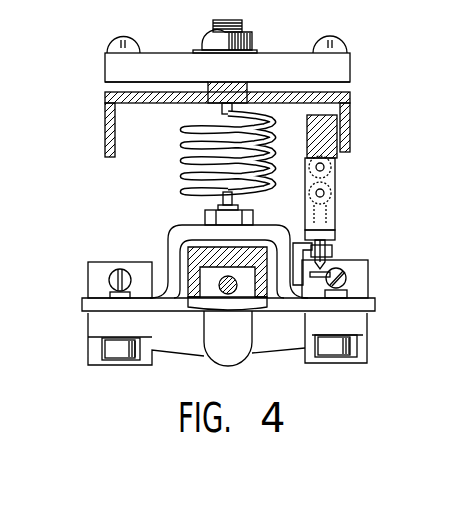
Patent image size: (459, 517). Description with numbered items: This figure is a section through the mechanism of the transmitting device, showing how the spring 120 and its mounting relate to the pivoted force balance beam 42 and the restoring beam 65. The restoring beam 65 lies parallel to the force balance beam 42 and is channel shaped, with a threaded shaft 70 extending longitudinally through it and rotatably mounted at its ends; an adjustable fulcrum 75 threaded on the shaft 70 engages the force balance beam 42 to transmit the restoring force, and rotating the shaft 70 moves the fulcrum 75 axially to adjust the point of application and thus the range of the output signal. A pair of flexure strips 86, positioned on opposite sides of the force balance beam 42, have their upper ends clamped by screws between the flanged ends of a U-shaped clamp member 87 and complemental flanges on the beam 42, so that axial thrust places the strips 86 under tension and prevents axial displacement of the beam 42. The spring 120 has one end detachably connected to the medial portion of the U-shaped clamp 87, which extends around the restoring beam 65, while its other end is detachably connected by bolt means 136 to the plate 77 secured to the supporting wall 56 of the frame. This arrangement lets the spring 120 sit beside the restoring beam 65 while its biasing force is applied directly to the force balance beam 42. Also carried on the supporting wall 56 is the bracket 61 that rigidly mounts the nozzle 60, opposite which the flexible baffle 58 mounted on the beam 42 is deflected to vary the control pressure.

The force balance beam 42 is at (172, 355).
The vertical supporting wall 56 is at (163, 105).
The flexible baffle 58 is at (313, 278).
The nozzle 60 is at (333, 265).
The bracket 61 is at (337, 188).
The restoring beam 65 is at (188, 255).
The threaded shaft 70 is at (229, 298).
The adjustable fulcrum 75 is at (200, 313).
The plate 77 is at (105, 66).
The flexure strips 86 is at (85, 315).
The U-shaped clamp member 87 is at (187, 225).
The spring 120 is at (185, 158).
The bolt means 136 is at (200, 45).